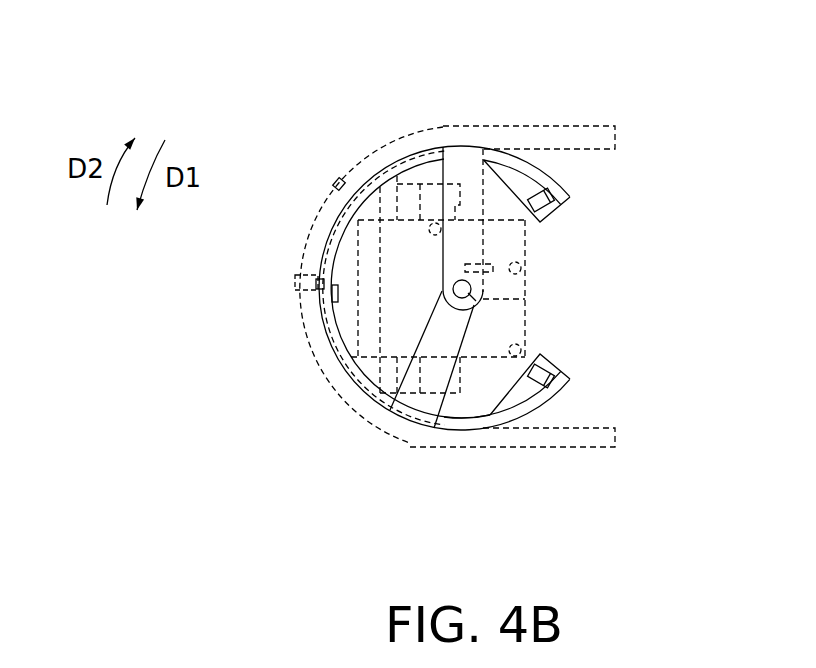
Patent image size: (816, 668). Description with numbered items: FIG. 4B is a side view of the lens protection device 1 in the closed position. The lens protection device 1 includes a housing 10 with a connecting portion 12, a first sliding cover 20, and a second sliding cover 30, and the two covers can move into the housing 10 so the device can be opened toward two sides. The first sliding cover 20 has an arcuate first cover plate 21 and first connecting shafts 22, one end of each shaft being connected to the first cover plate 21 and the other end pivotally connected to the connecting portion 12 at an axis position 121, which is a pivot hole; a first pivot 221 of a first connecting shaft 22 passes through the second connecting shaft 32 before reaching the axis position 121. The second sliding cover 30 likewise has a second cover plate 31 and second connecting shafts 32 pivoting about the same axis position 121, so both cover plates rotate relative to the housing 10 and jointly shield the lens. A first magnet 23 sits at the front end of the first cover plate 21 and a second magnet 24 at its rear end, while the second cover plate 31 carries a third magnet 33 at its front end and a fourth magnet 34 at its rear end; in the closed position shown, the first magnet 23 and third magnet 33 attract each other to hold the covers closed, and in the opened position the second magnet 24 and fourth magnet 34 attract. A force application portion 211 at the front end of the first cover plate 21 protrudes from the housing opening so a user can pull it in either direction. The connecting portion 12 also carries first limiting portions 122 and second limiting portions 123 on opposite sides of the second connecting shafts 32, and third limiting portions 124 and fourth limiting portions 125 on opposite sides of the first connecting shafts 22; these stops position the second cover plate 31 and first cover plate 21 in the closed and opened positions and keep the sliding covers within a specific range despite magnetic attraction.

The lens protection device 1 is at (290, 105).
The housing 10 is at (368, 157).
The connecting portion 12 is at (535, 238).
The first sliding cover 20 is at (397, 167).
The first cover plate 21 is at (344, 207).
The first connecting shafts 22 is at (465, 160).
The first magnet 23 is at (318, 275).
The second magnet 24 is at (552, 195).
The second sliding cover 30 is at (458, 430).
The second cover plate 31 is at (335, 340).
The second connecting shafts 32 is at (408, 410).
The third magnet 33 is at (336, 292).
The fourth magnet 34 is at (560, 386).
The axis position 121 is at (471, 287).
The first limiting portions 122 is at (340, 365).
The second limiting portions 123 is at (522, 348).
The third limiting portions 124 is at (433, 233).
The fourth limiting portions 125 is at (522, 265).
The force application portion 211 is at (300, 282).
The first pivot 221 is at (473, 299).